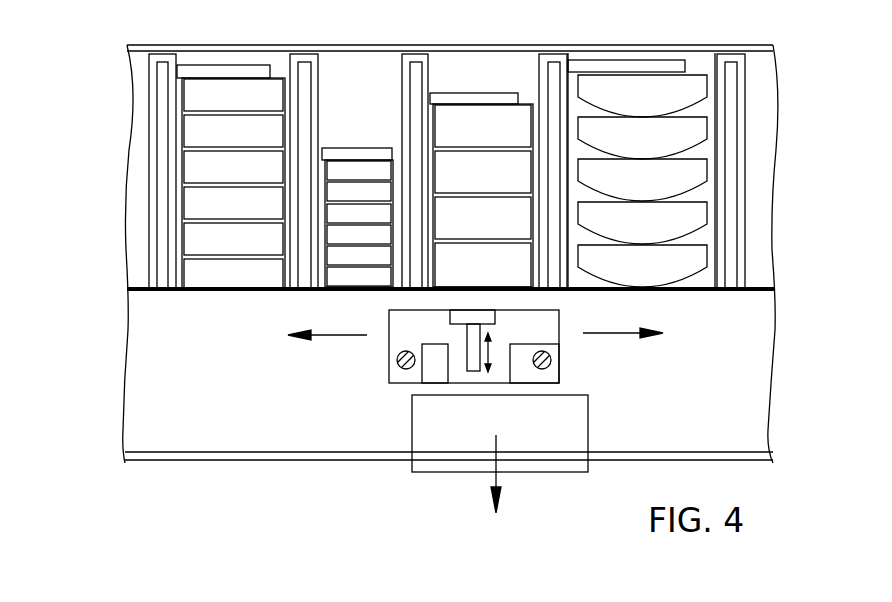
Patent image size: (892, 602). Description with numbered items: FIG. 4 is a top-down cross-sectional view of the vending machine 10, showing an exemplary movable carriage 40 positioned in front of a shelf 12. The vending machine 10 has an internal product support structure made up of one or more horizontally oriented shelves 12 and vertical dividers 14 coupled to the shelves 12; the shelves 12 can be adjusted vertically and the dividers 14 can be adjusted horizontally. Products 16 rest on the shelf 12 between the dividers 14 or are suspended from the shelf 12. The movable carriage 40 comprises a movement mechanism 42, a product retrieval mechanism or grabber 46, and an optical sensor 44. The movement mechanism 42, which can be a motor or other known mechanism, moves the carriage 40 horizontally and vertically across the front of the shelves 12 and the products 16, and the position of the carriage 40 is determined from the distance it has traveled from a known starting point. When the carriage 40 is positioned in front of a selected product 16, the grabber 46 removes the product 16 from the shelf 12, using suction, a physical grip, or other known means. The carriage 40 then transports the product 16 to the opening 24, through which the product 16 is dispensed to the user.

The vending machine 10 is at (108, 60).
The shelf 12 is at (762, 88).
The vertical divider 14 is at (161, 151).
The product 16 is at (196, 273).
The opening 24 is at (441, 467).
The movable carriage 40 is at (358, 371).
The movement mechanism 42 is at (560, 373).
The optical sensor 44 is at (430, 369).
The product retrieval mechanism 46 is at (458, 322).